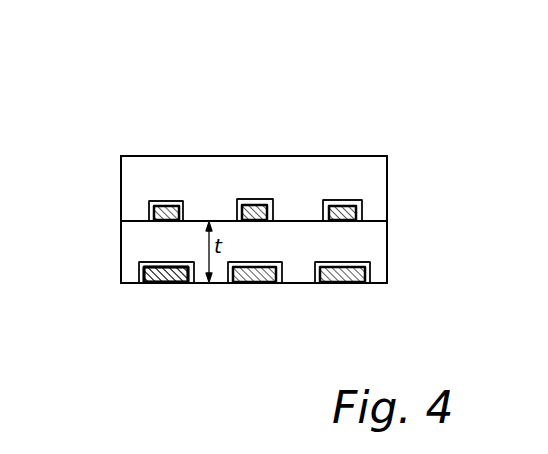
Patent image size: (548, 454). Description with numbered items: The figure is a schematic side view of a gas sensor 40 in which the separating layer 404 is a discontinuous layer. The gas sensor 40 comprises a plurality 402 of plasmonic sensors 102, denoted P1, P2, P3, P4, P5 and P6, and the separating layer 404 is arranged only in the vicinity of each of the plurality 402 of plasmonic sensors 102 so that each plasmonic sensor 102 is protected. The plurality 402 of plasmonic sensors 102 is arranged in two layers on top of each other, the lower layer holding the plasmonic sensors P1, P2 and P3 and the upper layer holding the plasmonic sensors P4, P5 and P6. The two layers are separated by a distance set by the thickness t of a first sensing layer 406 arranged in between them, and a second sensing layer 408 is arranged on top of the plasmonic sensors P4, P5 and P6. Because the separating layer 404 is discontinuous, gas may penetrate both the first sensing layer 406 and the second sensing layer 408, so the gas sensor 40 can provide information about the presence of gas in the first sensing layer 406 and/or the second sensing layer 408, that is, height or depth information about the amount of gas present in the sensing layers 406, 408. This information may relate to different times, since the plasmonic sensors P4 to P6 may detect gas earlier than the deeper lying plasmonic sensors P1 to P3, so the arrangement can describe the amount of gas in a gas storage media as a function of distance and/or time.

The gas sensor 40 is at (148, 78).
The second sensing layer 408 is at (375, 177).
The first sensing layer 406 is at (372, 242).
The separating layer 404 is at (148, 203).
The plurality of plasmonic sensors 402 is at (138, 283).
The plasmonic sensor 102 is at (163, 283).
The plasmonic sensor P1 is at (183, 283).
The plasmonic sensor P2 is at (258, 283).
The plasmonic sensor P3 is at (343, 283).
The plasmonic sensor P4 is at (170, 210).
The plasmonic sensor P5 is at (257, 212).
The plasmonic sensor P6 is at (338, 212).